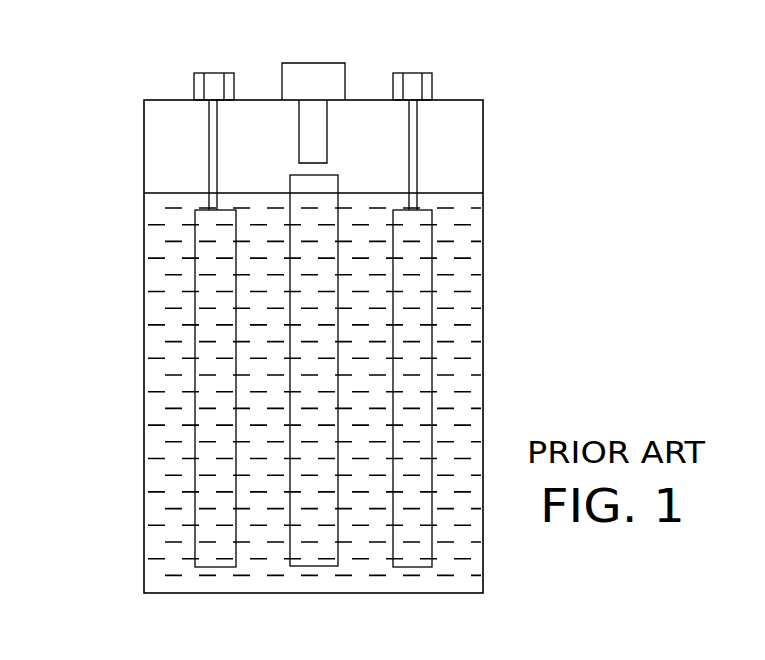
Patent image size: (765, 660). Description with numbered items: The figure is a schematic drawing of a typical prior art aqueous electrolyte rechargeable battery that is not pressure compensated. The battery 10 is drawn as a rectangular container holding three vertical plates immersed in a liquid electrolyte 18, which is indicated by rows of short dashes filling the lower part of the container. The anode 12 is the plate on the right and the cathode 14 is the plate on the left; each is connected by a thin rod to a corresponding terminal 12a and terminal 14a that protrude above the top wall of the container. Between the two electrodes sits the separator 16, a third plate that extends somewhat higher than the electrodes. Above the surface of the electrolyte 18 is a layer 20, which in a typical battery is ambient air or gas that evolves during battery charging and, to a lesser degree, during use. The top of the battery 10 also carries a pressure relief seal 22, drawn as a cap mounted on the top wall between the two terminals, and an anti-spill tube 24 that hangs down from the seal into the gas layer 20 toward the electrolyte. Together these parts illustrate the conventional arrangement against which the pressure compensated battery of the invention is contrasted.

The battery 10 is at (597, 129).
The anode 12 is at (428, 371).
The terminal 12a is at (413, 72).
The cathode 14 is at (203, 385).
The terminal 14a is at (212, 72).
The separator 16 is at (317, 553).
The electrolyte 18 is at (463, 282).
The layer 20 is at (465, 157).
The pressure relief seal 22 is at (297, 63).
The anti-spill tube 24 is at (317, 135).